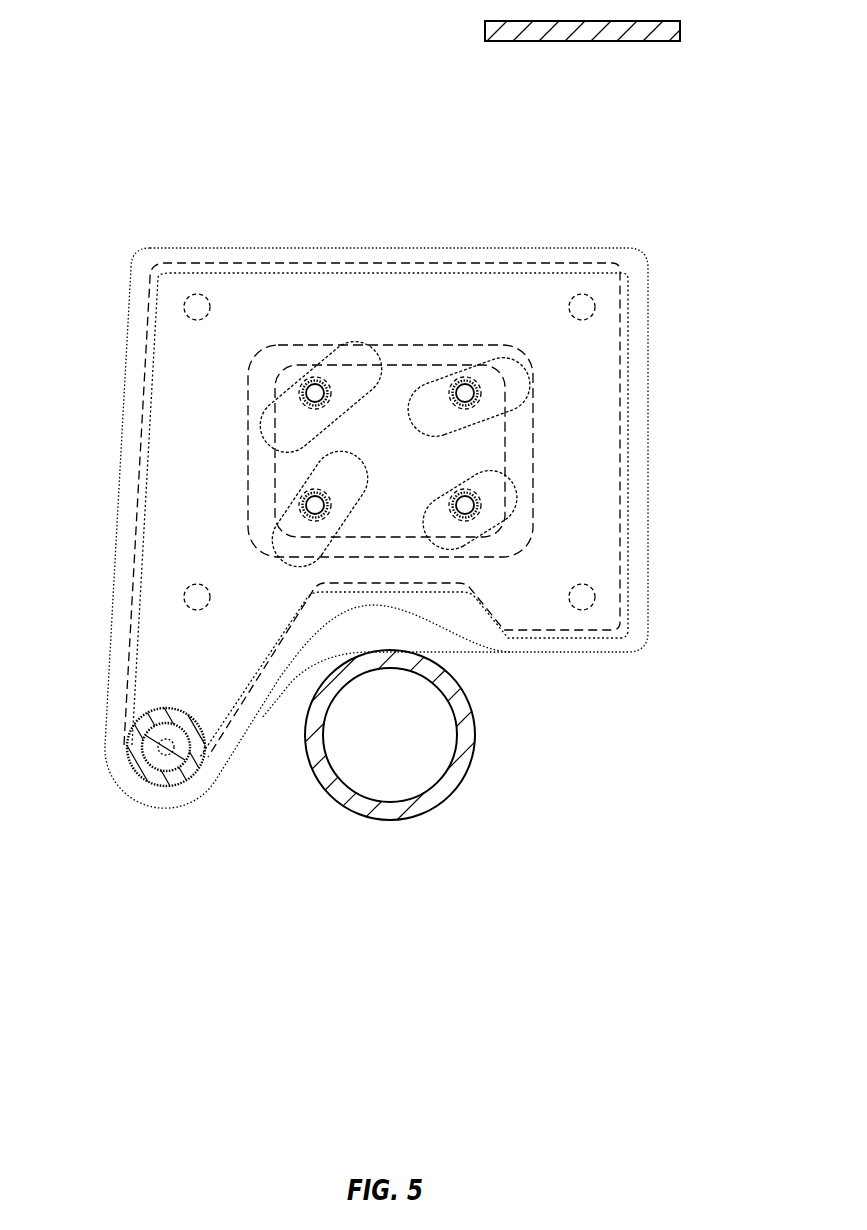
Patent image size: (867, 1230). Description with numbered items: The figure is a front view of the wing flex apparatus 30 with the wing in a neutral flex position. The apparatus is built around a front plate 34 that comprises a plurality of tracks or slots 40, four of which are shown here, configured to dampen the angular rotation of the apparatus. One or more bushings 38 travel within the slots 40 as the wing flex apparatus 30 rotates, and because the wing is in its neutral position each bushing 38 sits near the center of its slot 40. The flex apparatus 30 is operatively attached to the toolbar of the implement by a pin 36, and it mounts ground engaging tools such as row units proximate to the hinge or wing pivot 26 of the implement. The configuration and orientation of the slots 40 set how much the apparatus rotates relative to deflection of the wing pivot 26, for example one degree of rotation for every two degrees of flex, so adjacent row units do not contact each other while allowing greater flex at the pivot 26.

The wing pivot 26 is at (476, 724).
The wing flex apparatus 30 is at (118, 168).
The front plate 34 is at (585, 430).
The pin 36 is at (150, 738).
The bushing 38 is at (463, 388).
The slot 40 is at (303, 433).